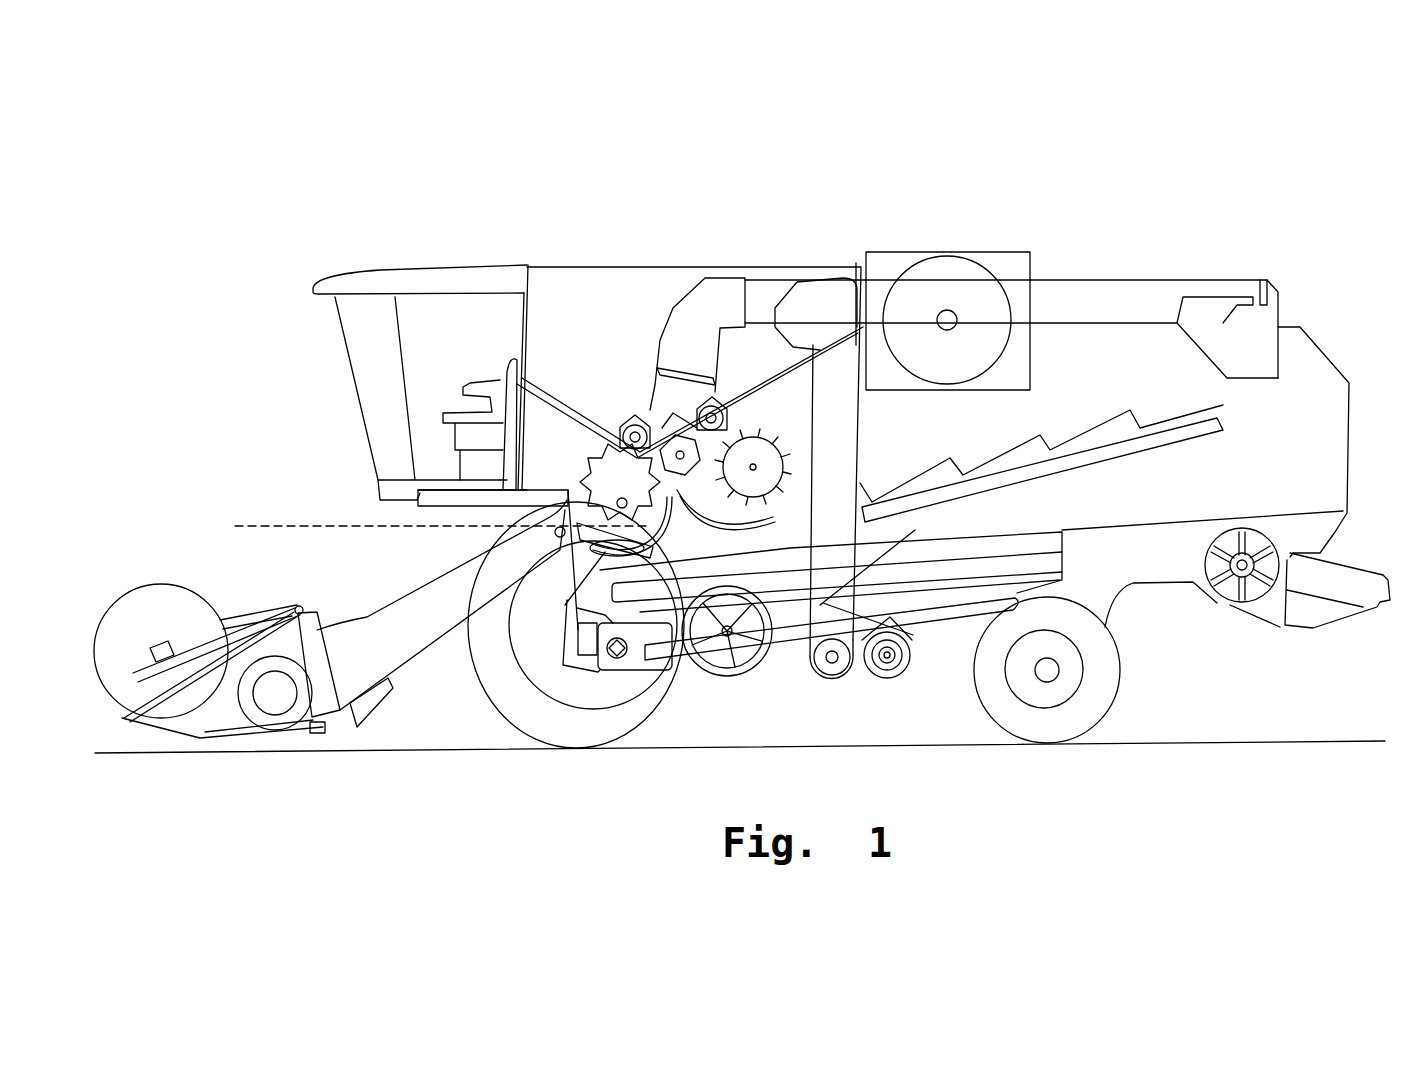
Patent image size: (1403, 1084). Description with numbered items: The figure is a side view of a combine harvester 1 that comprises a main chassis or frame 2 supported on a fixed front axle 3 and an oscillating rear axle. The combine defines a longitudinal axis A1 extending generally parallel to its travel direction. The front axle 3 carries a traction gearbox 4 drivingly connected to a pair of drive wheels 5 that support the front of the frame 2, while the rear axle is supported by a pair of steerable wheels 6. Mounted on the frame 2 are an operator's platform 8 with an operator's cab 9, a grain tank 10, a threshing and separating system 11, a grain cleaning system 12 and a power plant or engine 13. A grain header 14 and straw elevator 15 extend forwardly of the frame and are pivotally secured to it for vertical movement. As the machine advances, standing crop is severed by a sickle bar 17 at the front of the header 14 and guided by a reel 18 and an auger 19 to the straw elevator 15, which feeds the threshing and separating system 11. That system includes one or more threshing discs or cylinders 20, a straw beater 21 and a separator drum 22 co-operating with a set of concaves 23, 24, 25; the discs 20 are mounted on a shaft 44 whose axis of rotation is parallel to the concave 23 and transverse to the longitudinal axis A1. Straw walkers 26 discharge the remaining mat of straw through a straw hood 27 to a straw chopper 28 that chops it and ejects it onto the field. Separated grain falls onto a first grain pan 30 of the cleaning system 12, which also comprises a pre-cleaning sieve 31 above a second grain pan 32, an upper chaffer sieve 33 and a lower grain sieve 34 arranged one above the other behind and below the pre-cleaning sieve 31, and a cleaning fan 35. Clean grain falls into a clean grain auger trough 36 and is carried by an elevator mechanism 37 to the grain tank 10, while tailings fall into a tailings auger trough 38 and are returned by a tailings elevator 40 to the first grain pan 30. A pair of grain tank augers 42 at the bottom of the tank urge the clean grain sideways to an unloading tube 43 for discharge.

The combine harvester 1 is at (588, 222).
The main chassis or frame 2 is at (1125, 575).
The fixed front axle 3 is at (580, 640).
The traction gearbox 4 is at (648, 662).
The drive wheels 5 is at (512, 703).
The steerable wheels 6 is at (1108, 690).
The operator's platform 8 is at (432, 497).
The operator's cab 9 is at (343, 357).
The grain tank 10 is at (578, 300).
The threshing and separating system 11 is at (470, 539).
The grain cleaning system 12 is at (933, 682).
The power plant or engine 13 is at (957, 232).
The grain header 14 is at (208, 570).
The straw elevator 15 is at (365, 620).
The sickle bar 17 is at (217, 738).
The reel 18 is at (150, 595).
The auger 19 is at (280, 700).
The threshing discs or cylinders 20 is at (588, 430).
The straw beater 21 is at (655, 420).
The separator drum 22 is at (790, 447).
The concave 23 is at (577, 590).
The concave 24 is at (700, 500).
The concave 25 is at (800, 495).
The straw walkers 26 is at (1240, 423).
The straw hood 27 is at (1313, 350).
The straw chopper 28 is at (1247, 595).
The first grain pan 30 is at (672, 715).
The pre-cleaning sieve 31 is at (868, 553).
The second grain pan 32 is at (783, 597).
The upper chaffer sieve 33 is at (950, 583).
The lower grain sieve 34 is at (923, 610).
The cleaning fan 35 is at (728, 677).
The clean grain auger trough 36 is at (830, 680).
The elevator mechanism 37 is at (820, 315).
The tailings auger trough 38 is at (880, 678).
The tailings elevator 40 is at (866, 650).
The grain tank augers 42 is at (630, 430).
The unloading tube 43 is at (1118, 283).
The shaft 44 is at (600, 470).
The longitudinal axis A1 is at (285, 526).